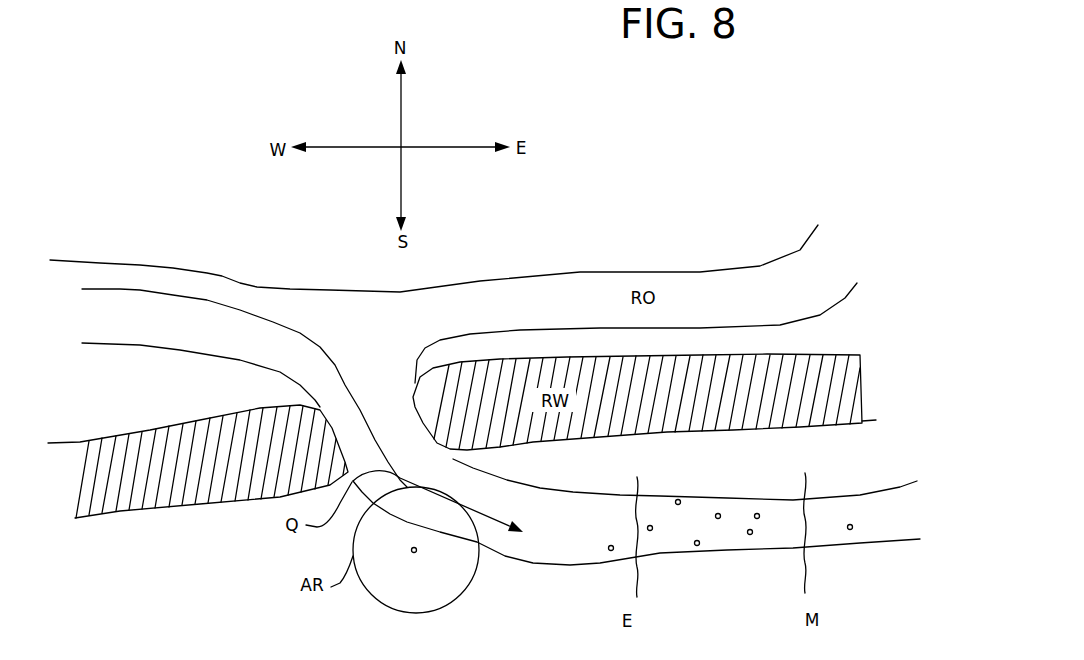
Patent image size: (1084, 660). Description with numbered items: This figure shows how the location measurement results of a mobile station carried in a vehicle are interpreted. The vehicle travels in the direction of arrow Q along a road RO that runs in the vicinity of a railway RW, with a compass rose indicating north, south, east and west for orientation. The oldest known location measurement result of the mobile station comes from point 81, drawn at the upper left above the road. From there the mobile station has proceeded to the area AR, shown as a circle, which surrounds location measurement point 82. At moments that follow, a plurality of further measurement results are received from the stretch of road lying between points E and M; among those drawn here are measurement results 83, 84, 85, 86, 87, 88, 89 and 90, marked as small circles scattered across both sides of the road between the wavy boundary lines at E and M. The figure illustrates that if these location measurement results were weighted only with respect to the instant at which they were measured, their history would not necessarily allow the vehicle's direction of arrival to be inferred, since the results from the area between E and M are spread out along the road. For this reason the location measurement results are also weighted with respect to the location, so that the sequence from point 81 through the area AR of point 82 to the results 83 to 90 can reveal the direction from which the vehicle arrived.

The point 81 is at (180, 246).
The location measurement point 82 is at (411, 551).
The measurement result 83 is at (680, 500).
The measurement result 84 is at (696, 546).
The measurement result 85 is at (720, 513).
The measurement result 86 is at (850, 524).
The measurement result 87 is at (749, 535).
The measurement result 88 is at (650, 525).
The measurement result 89 is at (759, 513).
The measurement result 90 is at (609, 551).